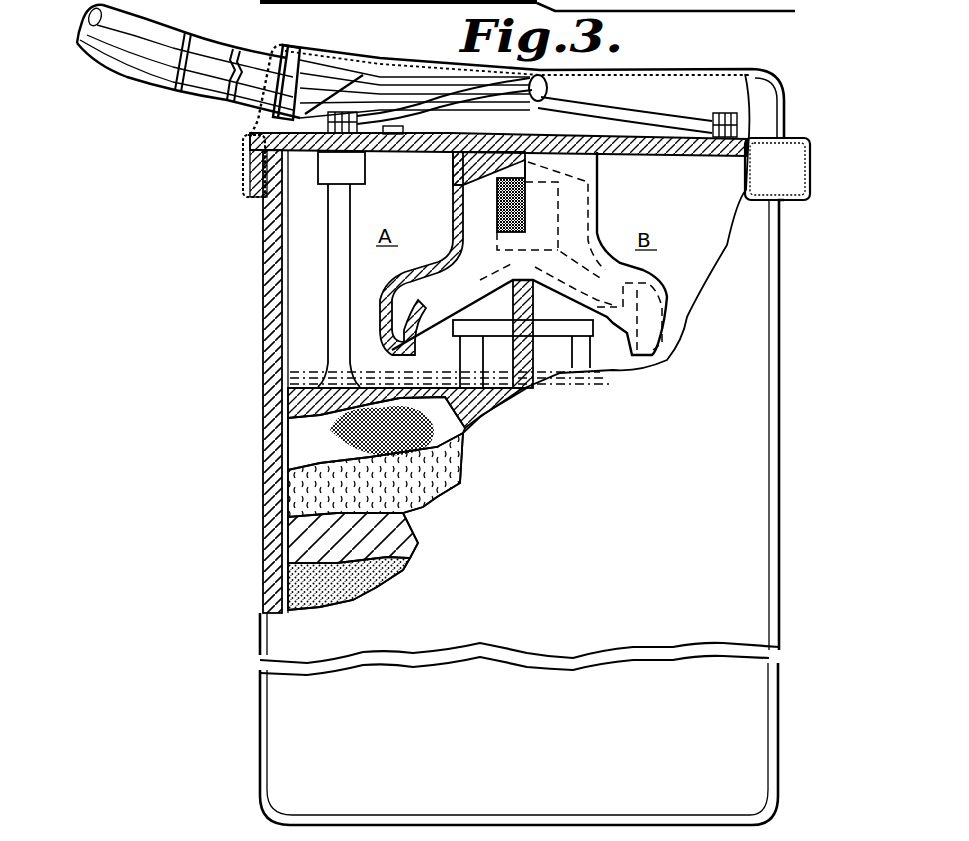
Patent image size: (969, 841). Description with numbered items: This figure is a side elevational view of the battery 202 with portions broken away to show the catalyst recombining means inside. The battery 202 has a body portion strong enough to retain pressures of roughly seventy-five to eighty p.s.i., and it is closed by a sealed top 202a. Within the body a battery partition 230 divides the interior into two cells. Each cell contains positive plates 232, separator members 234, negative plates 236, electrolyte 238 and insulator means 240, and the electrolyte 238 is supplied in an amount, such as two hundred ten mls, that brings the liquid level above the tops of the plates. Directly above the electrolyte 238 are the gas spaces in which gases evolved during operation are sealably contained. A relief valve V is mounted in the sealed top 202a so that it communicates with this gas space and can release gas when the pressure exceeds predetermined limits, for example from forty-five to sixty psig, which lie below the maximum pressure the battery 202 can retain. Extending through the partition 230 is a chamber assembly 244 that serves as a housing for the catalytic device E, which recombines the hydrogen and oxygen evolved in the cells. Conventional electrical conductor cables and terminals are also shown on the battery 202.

The battery 202 is at (752, 318).
The sealed top 202a is at (680, 153).
The battery partition 230 is at (535, 318).
The positive plates 232 is at (300, 445).
The separator members 234 is at (298, 498).
The negative plates 236 is at (280, 545).
The electrolyte 238 is at (290, 373).
The insulator means 240 is at (310, 582).
The chamber assembly 244 is at (578, 164).
The relief valve V is at (398, 140).
The catalytic device E is at (485, 211).